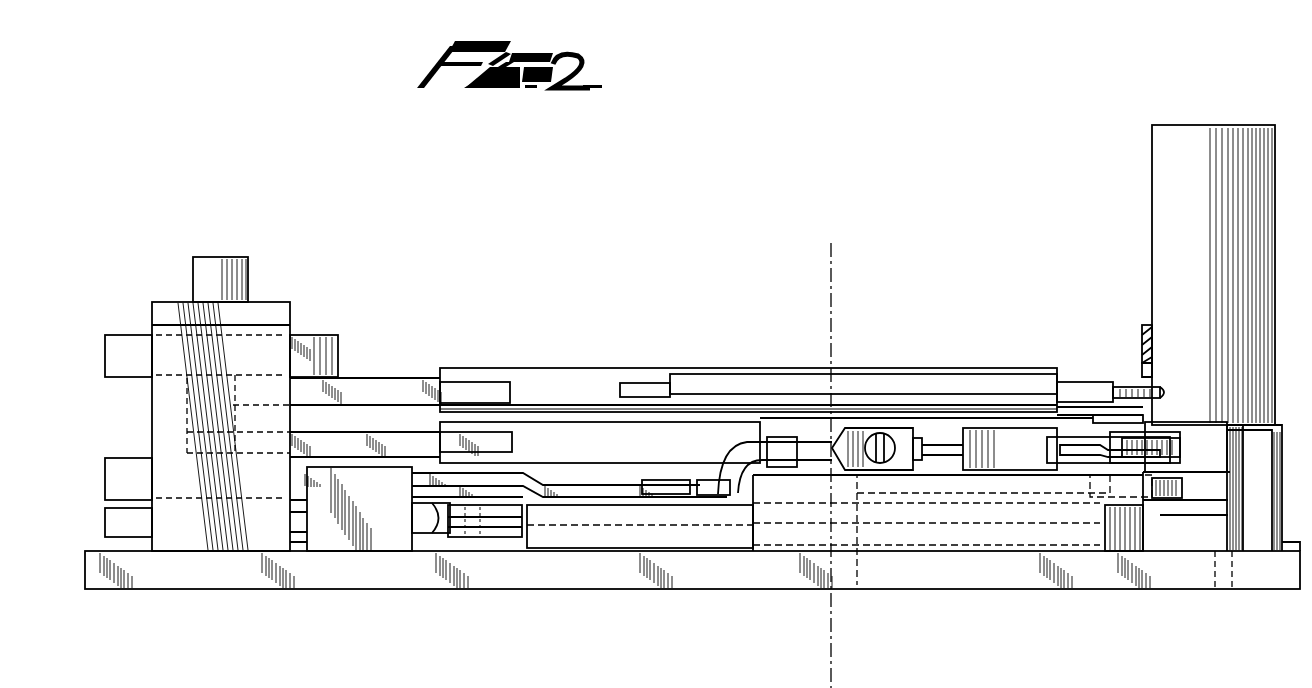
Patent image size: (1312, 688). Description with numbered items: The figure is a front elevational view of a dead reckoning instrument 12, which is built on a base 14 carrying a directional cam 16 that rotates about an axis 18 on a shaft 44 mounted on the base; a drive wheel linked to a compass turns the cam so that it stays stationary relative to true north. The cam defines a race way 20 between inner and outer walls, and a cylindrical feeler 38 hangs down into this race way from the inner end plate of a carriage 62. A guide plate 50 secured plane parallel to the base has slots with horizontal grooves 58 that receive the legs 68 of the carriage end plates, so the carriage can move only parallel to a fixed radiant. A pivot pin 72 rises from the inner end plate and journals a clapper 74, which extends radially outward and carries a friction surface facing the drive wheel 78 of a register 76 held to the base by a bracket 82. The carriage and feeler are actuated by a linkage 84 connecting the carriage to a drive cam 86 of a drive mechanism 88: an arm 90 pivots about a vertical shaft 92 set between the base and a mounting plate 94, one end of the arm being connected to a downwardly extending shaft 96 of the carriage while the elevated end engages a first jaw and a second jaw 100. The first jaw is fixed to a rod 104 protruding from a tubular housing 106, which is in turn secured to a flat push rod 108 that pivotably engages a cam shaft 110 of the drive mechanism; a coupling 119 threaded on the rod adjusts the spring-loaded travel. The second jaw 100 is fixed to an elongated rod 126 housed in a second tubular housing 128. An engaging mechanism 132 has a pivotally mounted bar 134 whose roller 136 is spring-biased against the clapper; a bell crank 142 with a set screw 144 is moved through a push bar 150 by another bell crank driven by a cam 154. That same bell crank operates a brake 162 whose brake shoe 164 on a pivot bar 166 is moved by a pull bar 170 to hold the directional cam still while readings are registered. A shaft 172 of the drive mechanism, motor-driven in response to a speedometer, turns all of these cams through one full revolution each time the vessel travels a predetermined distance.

The dead reckoning instrument 12 is at (936, 220).
The base 14 is at (632, 573).
The directional cam 16 is at (602, 530).
The axis 18 is at (831, 258).
The race way 20 is at (643, 508).
The cylindrical feeler 38 is at (958, 545).
The shaft 44 is at (810, 570).
The guide plate 50 is at (805, 410).
The horizontal grooves 58 is at (912, 484).
The carriage 62 is at (1000, 525).
The legs 68 is at (1022, 440).
The pivot pin 72 is at (972, 450).
The clapper 74 is at (1062, 437).
The register 76 is at (1162, 188).
The drive wheel 78 is at (1262, 425).
The bracket 82 is at (1288, 520).
The linkage 84 is at (887, 362).
The drive cam 86 is at (137, 378).
The drive mechanism 88 is at (330, 288).
The arm 90 is at (1195, 500).
The vertical shaft 92 is at (1230, 560).
The mounting plate 94 is at (1148, 335).
The downwardly extending shaft 96 is at (1088, 520).
The second jaw 100 is at (1162, 428).
The rod 104 is at (1152, 378).
The tubular housing 106 is at (582, 405).
The flat push rod 108 is at (372, 400).
The cam shaft 110 is at (288, 416).
The coupling 119 is at (1098, 395).
The elongated rod 126 is at (1124, 395).
The tubular housing 128 is at (718, 385).
The engaging mechanism 132 is at (712, 497).
The pivotally mounted bar 134 is at (1000, 455).
The roller 136 is at (1172, 440).
The bell crank 142 is at (748, 446).
The set screw 144 is at (890, 432).
The push bar 150 is at (425, 462).
The cam 154 is at (117, 525).
The brake 162 is at (503, 545).
The brake shoe 164 is at (442, 533).
The pivot bar 166 is at (527, 523).
The pull bar 170 is at (412, 499).
The shaft 172 is at (252, 288).